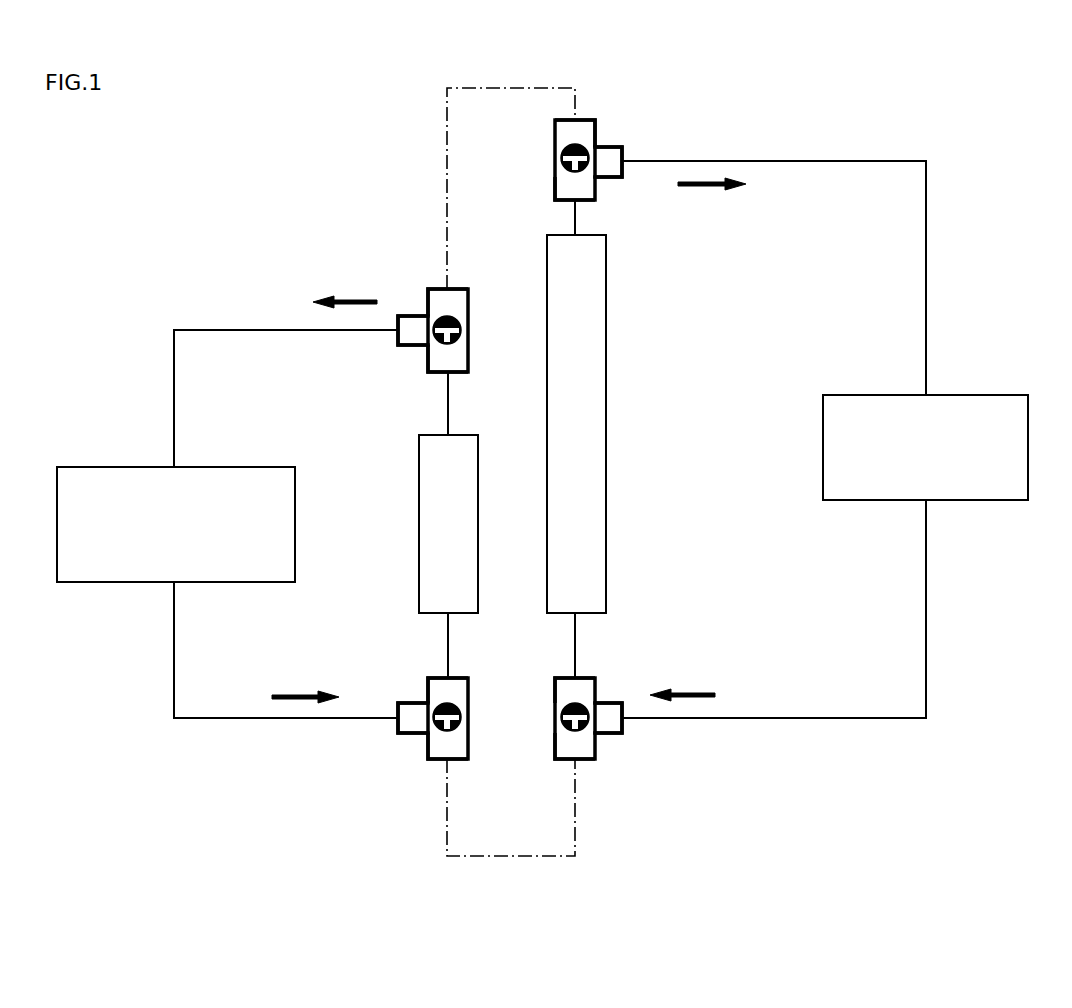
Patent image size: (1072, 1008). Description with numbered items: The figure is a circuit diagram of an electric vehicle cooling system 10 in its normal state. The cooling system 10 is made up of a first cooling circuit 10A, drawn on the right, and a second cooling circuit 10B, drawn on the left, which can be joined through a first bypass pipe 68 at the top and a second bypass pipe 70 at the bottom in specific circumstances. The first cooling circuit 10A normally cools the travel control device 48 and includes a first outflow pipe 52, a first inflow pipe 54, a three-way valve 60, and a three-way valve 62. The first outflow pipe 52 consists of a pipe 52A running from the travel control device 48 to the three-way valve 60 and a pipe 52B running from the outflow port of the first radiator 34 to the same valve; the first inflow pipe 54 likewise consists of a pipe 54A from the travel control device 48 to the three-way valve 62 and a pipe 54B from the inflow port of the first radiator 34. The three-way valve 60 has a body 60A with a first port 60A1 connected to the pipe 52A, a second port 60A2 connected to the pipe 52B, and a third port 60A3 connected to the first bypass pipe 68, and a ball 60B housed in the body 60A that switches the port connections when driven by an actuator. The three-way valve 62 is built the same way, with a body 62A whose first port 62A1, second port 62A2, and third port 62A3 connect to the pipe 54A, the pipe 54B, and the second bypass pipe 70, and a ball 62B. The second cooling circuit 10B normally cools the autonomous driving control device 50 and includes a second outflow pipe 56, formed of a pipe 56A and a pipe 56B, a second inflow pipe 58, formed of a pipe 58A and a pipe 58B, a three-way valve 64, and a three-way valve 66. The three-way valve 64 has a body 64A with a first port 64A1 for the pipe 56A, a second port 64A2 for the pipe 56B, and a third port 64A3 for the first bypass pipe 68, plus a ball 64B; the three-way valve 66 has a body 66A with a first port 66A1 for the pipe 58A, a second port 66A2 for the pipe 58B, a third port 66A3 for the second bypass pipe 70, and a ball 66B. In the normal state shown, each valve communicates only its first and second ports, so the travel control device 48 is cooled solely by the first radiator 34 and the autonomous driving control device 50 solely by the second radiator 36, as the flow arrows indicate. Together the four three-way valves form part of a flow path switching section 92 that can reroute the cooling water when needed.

The cooling system 10 is at (824, 90).
The first cooling circuit 10A is at (843, 119).
The second cooling circuit 10B is at (228, 278).
The first radiator 34 is at (607, 378).
The second radiator 36 is at (418, 528).
The travel control device 48 is at (957, 394).
The autonomous driving control device 50 is at (225, 466).
The first outflow pipe 52 is at (843, 147).
The pipe 52A is at (926, 190).
The pipe 52B is at (578, 220).
The first inflow pipe 54 is at (818, 722).
The pipe 54A is at (928, 570).
The pipe 54B is at (578, 650).
The second outflow pipe 56 is at (250, 326).
The pipe 56A is at (318, 334).
The pipe 56B is at (452, 405).
The second inflow pipe 58 is at (265, 722).
The pipe 58A is at (200, 720).
The pipe 58B is at (446, 645).
The three-way valve 60 is at (594, 123).
The body 60A is at (598, 128).
The first port 60A1 is at (615, 160).
The second port 60A2 is at (565, 200).
The third port 60A3 is at (565, 120).
The ball 60B is at (568, 151).
The three-way valve 62 is at (604, 711).
The body 62A is at (620, 700).
The first port 62A1 is at (622, 730).
The second port 62A2 is at (568, 680).
The third port 62A3 is at (592, 760).
The ball 62B is at (575, 726).
The three-way valve 64 is at (440, 305).
The body 64A is at (470, 320).
The first port 64A1 is at (398, 340).
The second port 64A2 is at (458, 373).
The third port 64A3 is at (435, 289).
The ball 64B is at (462, 345).
The three-way valve 66 is at (431, 689).
The body 66A is at (472, 715).
The first port 66A1 is at (398, 731).
The second port 66A2 is at (455, 676).
The third port 66A3 is at (462, 762).
The ball 66B is at (445, 726).
The first bypass pipe 68 is at (498, 86).
The second bypass pipe 70 is at (525, 856).
The flow path switching section 92 is at (683, 98).